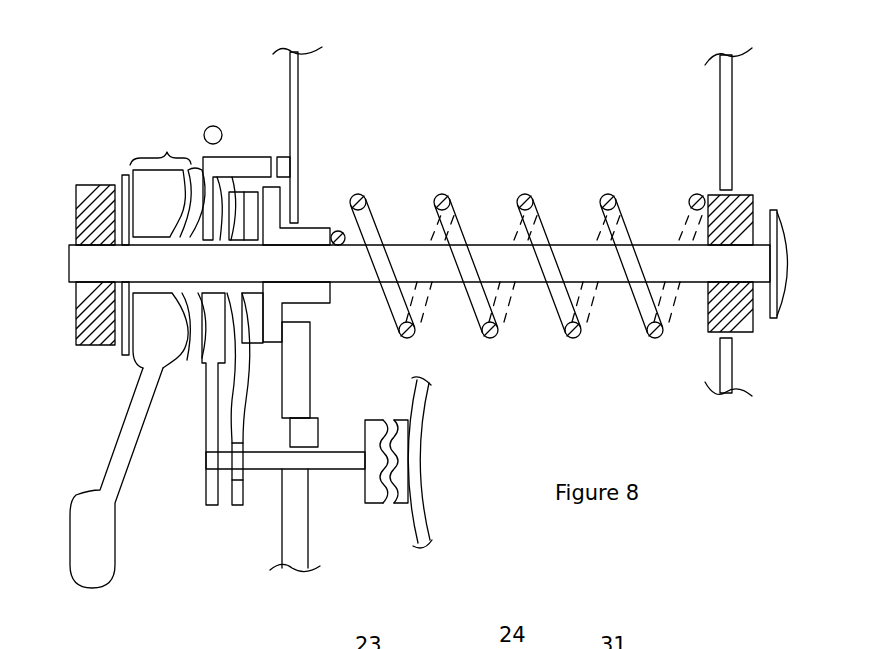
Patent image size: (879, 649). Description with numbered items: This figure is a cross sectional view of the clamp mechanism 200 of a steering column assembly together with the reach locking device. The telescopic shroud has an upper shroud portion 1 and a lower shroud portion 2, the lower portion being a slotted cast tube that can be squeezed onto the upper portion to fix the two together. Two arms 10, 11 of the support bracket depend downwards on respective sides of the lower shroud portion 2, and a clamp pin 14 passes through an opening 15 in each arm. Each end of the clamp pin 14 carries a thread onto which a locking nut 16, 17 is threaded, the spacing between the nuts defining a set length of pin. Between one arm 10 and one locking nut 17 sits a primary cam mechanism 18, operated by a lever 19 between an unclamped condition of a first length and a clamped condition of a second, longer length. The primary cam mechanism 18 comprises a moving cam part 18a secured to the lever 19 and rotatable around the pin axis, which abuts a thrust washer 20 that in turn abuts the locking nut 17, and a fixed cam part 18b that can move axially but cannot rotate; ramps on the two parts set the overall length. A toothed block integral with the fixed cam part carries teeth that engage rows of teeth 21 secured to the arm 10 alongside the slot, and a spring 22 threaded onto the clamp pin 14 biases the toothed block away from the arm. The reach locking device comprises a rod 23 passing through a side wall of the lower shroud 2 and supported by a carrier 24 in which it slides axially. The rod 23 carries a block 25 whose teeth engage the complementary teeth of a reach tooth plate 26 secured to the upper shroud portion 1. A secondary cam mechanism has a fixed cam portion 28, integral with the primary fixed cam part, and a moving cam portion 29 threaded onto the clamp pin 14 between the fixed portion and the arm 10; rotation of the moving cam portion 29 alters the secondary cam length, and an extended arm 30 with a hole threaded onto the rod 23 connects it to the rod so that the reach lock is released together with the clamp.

The upper shroud portion 1 is at (418, 512).
The lower shroud portion 2 is at (300, 352).
The arm 10 is at (300, 122).
The arm 11 is at (725, 118).
The clamp pin 14 is at (298, 226).
The opening 15 is at (740, 195).
The locking nut 16 is at (782, 312).
The locking nut 17 is at (84, 216).
The primary cam mechanism 18 is at (160, 246).
The moving cam part 18a is at (156, 180).
The fixed cam part 18b is at (196, 170).
The lever 19 is at (100, 577).
The thrust washer 20 is at (124, 182).
The rows of teeth 21 is at (258, 170).
The spring 22 is at (283, 170).
The rod 23 is at (275, 465).
The carrier 24 is at (305, 436).
The block 25 is at (378, 500).
The reach tooth plate 26 is at (400, 430).
The fixed cam portion 28 is at (223, 215).
The moving cam portion 29 is at (222, 335).
The extended arm 30 is at (238, 506).
The clamp mechanism 200 is at (210, 126).